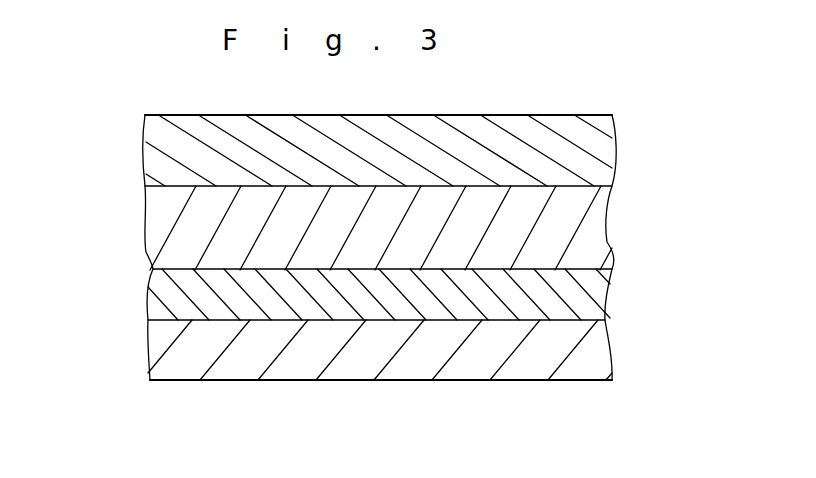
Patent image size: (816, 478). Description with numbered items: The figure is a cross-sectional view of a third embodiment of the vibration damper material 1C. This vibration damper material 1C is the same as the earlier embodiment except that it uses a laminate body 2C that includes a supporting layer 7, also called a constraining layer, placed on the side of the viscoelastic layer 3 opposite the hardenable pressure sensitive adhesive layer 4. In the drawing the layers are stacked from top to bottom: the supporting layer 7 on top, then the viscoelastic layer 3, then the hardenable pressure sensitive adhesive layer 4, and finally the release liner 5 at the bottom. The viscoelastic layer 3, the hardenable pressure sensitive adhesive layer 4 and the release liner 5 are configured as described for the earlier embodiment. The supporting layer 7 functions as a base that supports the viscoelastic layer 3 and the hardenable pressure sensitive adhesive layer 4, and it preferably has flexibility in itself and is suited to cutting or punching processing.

The vibration damper material 1C is at (598, 99).
The laminate body 2C is at (100, 320).
The supporting layer 7 is at (588, 145).
The viscoelastic layer 3 is at (580, 234).
The hardenable pressure sensitive adhesive layer 4 is at (575, 294).
The release liner 5 is at (582, 348).